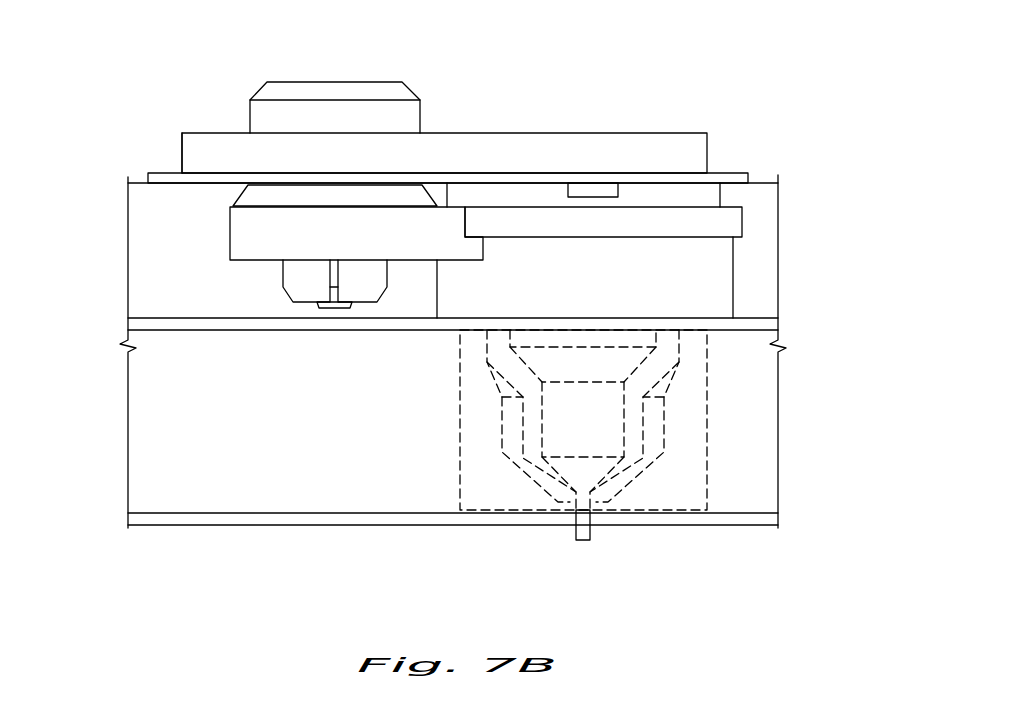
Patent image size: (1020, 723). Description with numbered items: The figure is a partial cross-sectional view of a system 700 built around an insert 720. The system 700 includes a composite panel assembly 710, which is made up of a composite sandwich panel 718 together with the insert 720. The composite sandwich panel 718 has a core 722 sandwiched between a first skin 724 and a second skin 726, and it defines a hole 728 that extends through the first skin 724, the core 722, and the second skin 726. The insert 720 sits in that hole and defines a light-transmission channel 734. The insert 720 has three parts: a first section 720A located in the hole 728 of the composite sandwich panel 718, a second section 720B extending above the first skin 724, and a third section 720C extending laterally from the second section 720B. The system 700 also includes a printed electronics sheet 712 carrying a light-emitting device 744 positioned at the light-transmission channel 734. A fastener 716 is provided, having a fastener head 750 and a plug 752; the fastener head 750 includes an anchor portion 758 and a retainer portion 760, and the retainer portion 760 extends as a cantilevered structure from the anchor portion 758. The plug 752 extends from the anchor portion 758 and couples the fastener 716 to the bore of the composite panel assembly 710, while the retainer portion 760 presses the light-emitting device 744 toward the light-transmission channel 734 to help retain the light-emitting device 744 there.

The system 700 is at (815, 80).
The composite panel assembly 710 is at (675, 275).
The printed electronics sheet 712 is at (765, 183).
The fastener 716 is at (167, 135).
The composite sandwich panel 718 is at (80, 528).
The insert 720 is at (702, 262).
The first section 720A is at (532, 450).
The second section 720B is at (722, 248).
The third section 720C is at (230, 223).
The core 722 is at (142, 415).
The first skin 724 is at (128, 322).
The second skin 726 is at (128, 520).
The hole 728 is at (697, 512).
The light-transmission channel 734 is at (533, 258).
The light-emitting device 744 is at (593, 190).
The fastener head 750 is at (198, 138).
The plug 752 is at (333, 308).
The anchor portion 758 is at (180, 52).
The retainer portion 760 is at (420, 52).